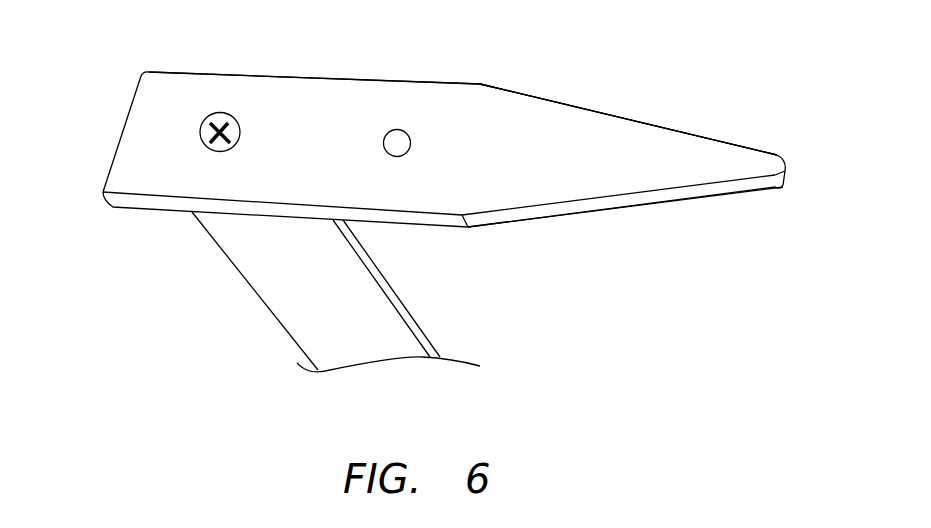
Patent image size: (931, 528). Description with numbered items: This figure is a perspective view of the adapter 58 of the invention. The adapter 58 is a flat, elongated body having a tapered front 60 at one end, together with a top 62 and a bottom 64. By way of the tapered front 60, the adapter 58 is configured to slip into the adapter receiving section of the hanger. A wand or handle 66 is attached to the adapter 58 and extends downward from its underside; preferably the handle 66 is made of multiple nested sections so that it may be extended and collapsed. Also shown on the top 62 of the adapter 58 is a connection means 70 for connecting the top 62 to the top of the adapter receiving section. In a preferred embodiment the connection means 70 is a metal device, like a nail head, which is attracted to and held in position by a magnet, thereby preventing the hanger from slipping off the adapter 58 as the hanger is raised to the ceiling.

The adapter 58 is at (553, 101).
The tapered front 60 is at (708, 139).
The top 62 is at (604, 177).
The bottom 64 is at (591, 209).
The handle 66 is at (268, 276).
The connection means 70 is at (399, 130).